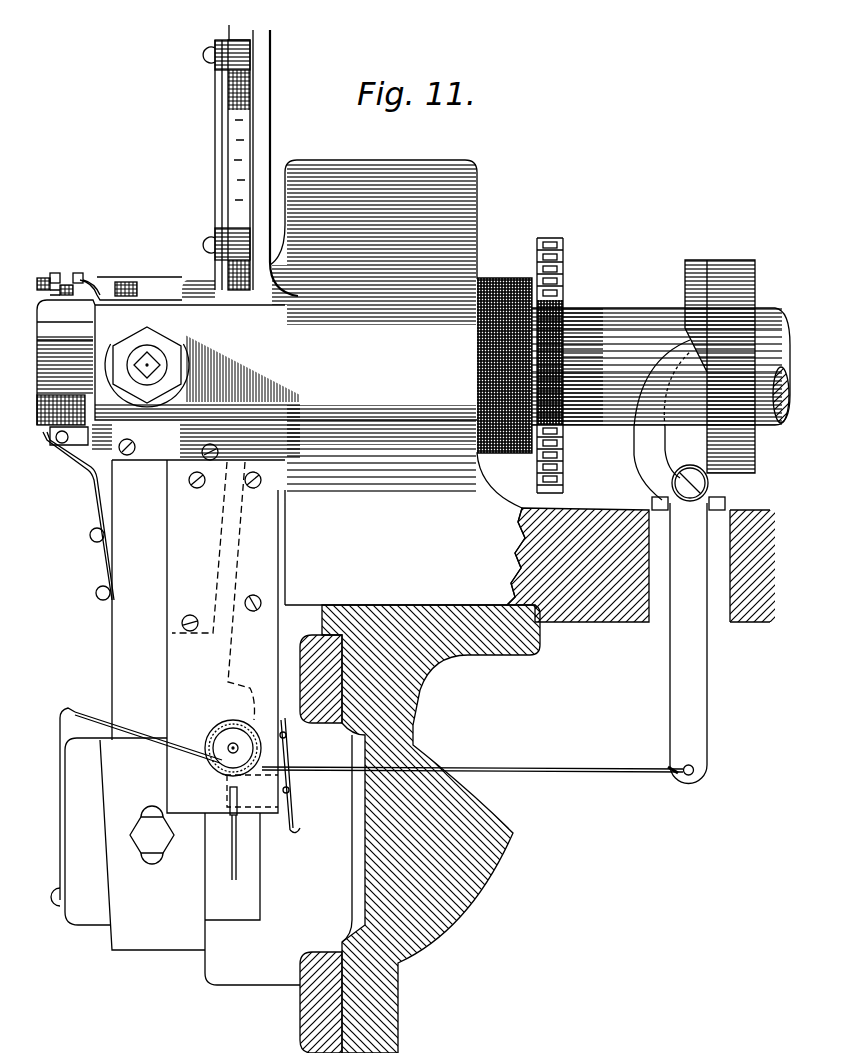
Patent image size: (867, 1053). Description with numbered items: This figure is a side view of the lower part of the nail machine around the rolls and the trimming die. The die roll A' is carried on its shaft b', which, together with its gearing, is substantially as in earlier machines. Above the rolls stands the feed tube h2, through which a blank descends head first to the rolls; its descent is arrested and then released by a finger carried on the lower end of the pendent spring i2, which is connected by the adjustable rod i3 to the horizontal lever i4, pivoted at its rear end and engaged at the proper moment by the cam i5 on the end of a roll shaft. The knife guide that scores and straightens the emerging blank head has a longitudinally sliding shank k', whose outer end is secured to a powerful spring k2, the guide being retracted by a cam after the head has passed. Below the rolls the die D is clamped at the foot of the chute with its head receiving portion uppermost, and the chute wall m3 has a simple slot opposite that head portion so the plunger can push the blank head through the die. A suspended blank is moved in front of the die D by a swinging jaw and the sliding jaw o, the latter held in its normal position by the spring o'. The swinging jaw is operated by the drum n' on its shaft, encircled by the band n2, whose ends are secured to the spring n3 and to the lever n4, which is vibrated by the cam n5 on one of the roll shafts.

The die roll A' is at (433, 541).
The pendent spring i2 is at (216, 188).
The feed tube h2 is at (233, 157).
The adjustable rod i3 is at (140, 282).
The horizontal lever i4 is at (80, 273).
The cam i5 is at (66, 362).
The shank of knife guide k' is at (53, 450).
The spring k2 is at (88, 478).
The shaft b' is at (661, 354).
The cam n5 is at (688, 276).
The lever n4 is at (671, 562).
The drum n' is at (226, 740).
The band n2 is at (192, 756).
The spring n3 is at (58, 740).
The wall of chute m3 is at (195, 636).
The spring o' is at (298, 774).
The jaw o is at (298, 827).
The die D is at (180, 845).